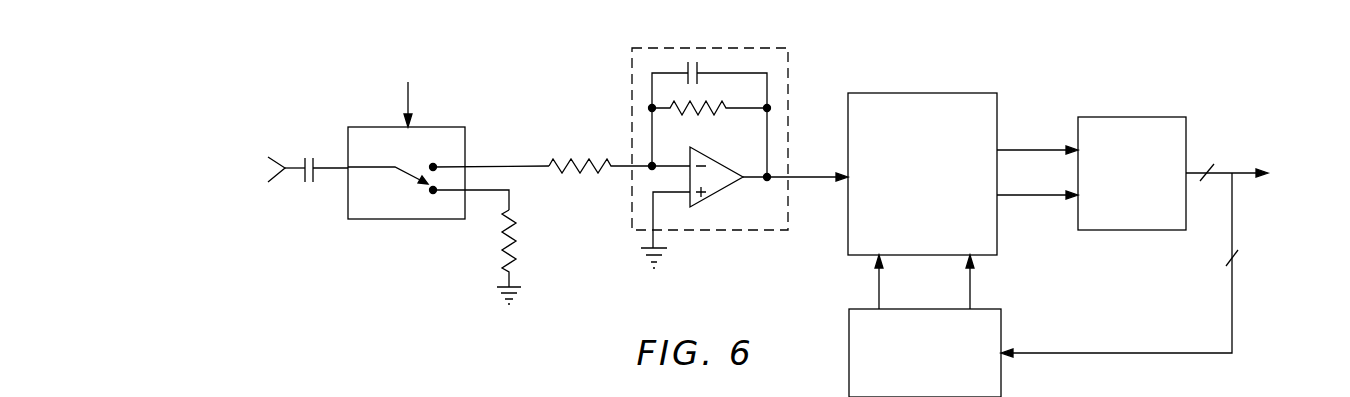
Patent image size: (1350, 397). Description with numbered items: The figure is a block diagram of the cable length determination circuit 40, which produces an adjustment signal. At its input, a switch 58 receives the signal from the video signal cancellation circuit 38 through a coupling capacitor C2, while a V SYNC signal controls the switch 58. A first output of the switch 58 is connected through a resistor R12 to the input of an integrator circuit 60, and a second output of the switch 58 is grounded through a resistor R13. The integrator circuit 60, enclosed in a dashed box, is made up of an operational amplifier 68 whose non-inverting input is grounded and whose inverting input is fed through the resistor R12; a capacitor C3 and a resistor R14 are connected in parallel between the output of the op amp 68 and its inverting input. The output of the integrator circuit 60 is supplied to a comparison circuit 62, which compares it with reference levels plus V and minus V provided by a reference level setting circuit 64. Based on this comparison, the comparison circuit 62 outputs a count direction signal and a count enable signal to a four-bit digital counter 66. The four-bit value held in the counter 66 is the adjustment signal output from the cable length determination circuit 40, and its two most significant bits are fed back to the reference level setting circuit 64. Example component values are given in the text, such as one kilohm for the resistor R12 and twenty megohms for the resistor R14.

The video signal cancellation circuit 38 is at (235, 180).
The capacitor C2 is at (312, 159).
The switch 58 is at (403, 221).
The resistor R12 is at (564, 159).
The resistor R13 is at (515, 235).
The integrator circuit 60 is at (754, 47).
The capacitor C3 is at (688, 62).
The resistor R14 is at (723, 103).
The operational amplifier 68 is at (718, 193).
The comparison circuit 62 is at (925, 92).
The 4-bit digital counter 66 is at (1133, 116).
The reference level setting circuit 64 is at (1002, 330).
The cable length determination circuit 40 is at (1203, 55).